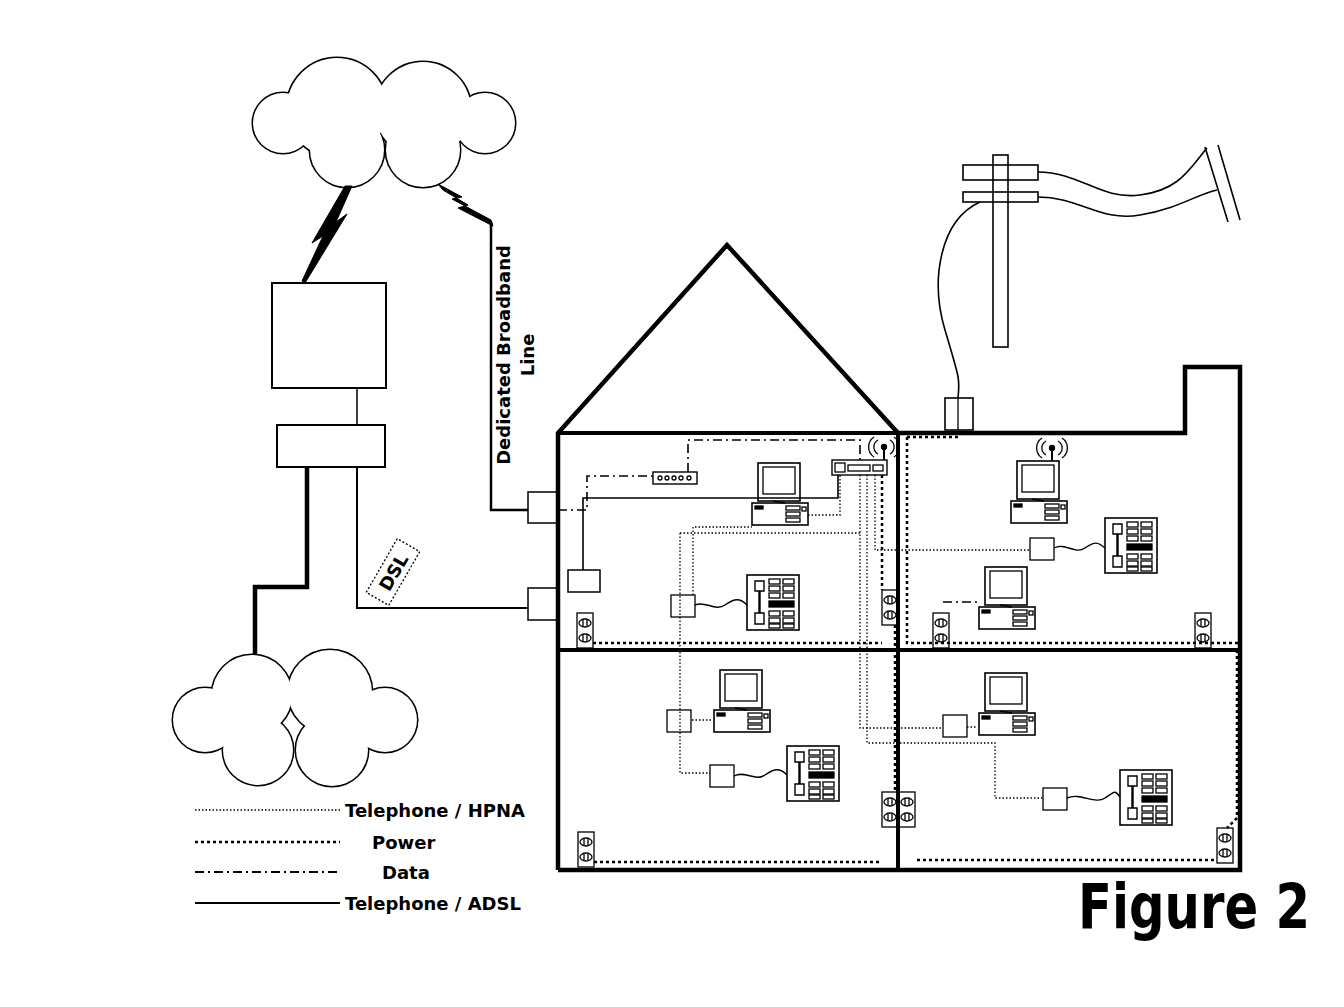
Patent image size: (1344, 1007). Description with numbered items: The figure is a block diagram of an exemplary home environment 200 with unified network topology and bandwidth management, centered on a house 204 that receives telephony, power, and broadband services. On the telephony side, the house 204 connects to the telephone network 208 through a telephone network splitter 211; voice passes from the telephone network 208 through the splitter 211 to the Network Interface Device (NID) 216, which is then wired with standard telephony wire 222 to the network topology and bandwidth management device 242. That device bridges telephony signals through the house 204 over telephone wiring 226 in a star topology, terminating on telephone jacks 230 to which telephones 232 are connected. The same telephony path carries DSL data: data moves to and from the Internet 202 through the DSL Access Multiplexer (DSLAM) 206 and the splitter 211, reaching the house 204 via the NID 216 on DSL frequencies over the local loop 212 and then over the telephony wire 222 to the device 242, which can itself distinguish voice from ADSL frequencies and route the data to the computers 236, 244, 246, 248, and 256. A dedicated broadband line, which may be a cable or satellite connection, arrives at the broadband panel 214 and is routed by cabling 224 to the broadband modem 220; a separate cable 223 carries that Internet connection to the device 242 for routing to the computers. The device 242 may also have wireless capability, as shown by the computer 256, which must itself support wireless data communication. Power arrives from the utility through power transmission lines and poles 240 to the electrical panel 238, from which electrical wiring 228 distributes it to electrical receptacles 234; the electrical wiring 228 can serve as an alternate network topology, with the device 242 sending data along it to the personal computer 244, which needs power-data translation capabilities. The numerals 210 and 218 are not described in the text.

The home environment 200 is at (815, 105).
The Internet 202 is at (510, 118).
The house 204 is at (775, 295).
The DSL Access Multiplexer (DSLAM) 206 is at (272, 350).
The telephone network 208 is at (418, 720).
The telephone line to telephone network 210 is at (305, 518).
The telephone network splitter 211 is at (277, 447).
The local loop 212 is at (358, 515).
The broadband panel 214 is at (546, 522).
The Network Interface Device (NID) 216 is at (545, 620).
The in-home interface box 218 is at (585, 583).
The broadband modem 220 is at (667, 471).
The standard telephony wire 222 is at (648, 526).
The separate cable 223 is at (698, 447).
The cabling 224 is at (640, 468).
The telephone wiring 226 is at (661, 780).
The electrical wiring 228 is at (1060, 636).
The telephone jacks 230 is at (1057, 788).
The telephones 232 is at (1145, 826).
The electrical receptacles 234 is at (1207, 651).
The computer 236 is at (975, 713).
The electrical panel 238 is at (975, 412).
The power transmission lines and poles 240 is at (1008, 295).
The network topology and bandwidth management device 242 is at (860, 458).
The computer 244 is at (1036, 605).
The computer 246 is at (772, 710).
The computer 248 is at (772, 462).
The computer 256 is at (1008, 505).